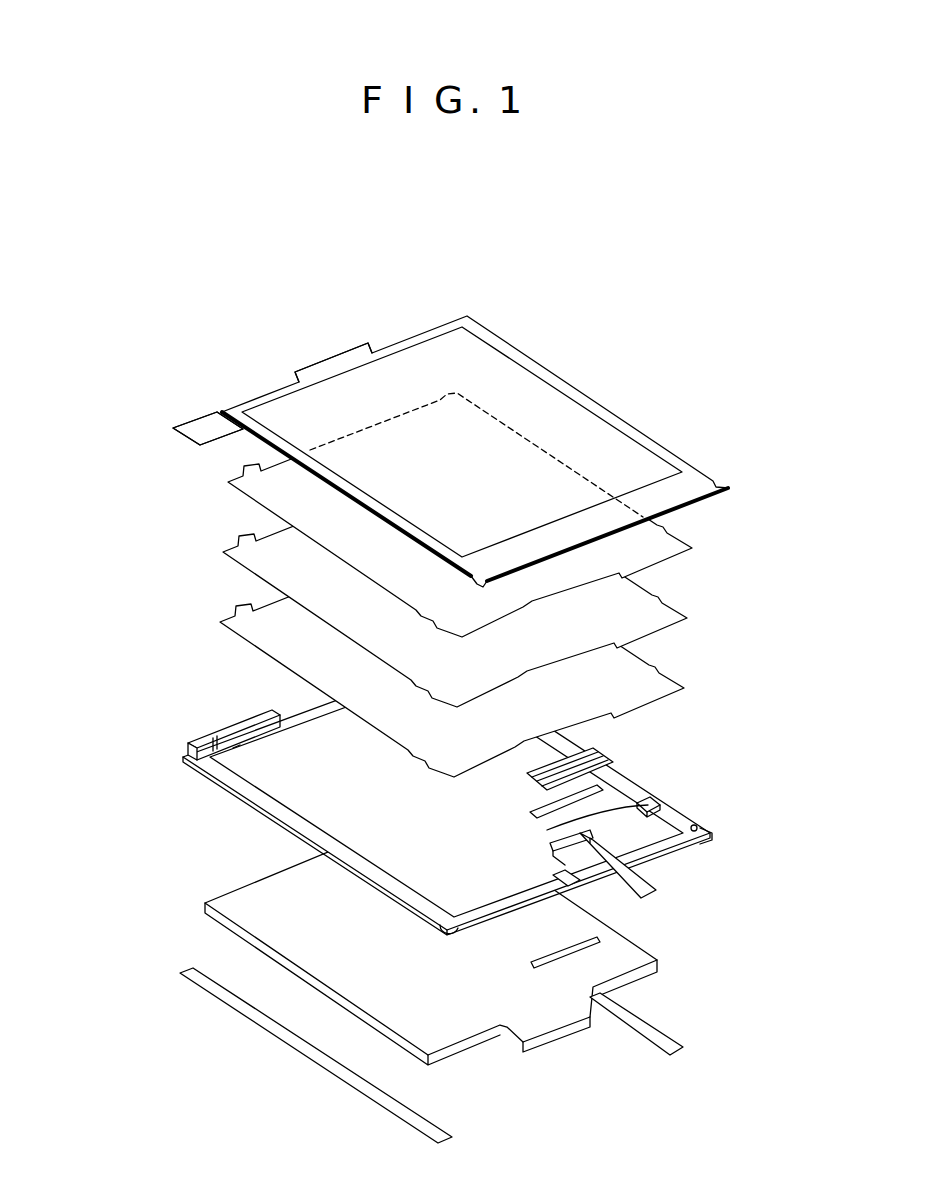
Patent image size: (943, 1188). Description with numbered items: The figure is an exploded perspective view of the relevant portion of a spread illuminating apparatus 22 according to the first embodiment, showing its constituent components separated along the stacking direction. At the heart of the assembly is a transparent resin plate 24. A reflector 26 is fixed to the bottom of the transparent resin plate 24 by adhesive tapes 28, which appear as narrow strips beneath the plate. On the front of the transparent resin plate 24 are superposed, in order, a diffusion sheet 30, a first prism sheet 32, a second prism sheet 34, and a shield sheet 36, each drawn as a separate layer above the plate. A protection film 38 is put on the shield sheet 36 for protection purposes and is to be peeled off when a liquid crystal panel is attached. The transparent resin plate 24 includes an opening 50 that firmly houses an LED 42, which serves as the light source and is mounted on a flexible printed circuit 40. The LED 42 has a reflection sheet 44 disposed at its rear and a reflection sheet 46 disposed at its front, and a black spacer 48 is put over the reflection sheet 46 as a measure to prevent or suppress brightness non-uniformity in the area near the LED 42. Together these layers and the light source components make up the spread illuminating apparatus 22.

The spread illuminating apparatus 22 is at (625, 357).
The transparent resin plate 24 is at (187, 750).
The reflector 26 is at (257, 903).
The adhesive tapes 28 is at (192, 974).
The diffusion sheet 30 is at (220, 622).
The prism sheet 32 is at (223, 552).
The prism sheet 34 is at (232, 480).
The shield sheet 36 is at (342, 365).
The protection film 38 is at (283, 407).
The flexible printed circuit 40 is at (645, 878).
The LED 42 is at (648, 800).
The reflection sheet 44 is at (598, 942).
The reflection sheet 46 is at (603, 790).
The black spacer 48 is at (590, 757).
The opening 50 is at (550, 866).